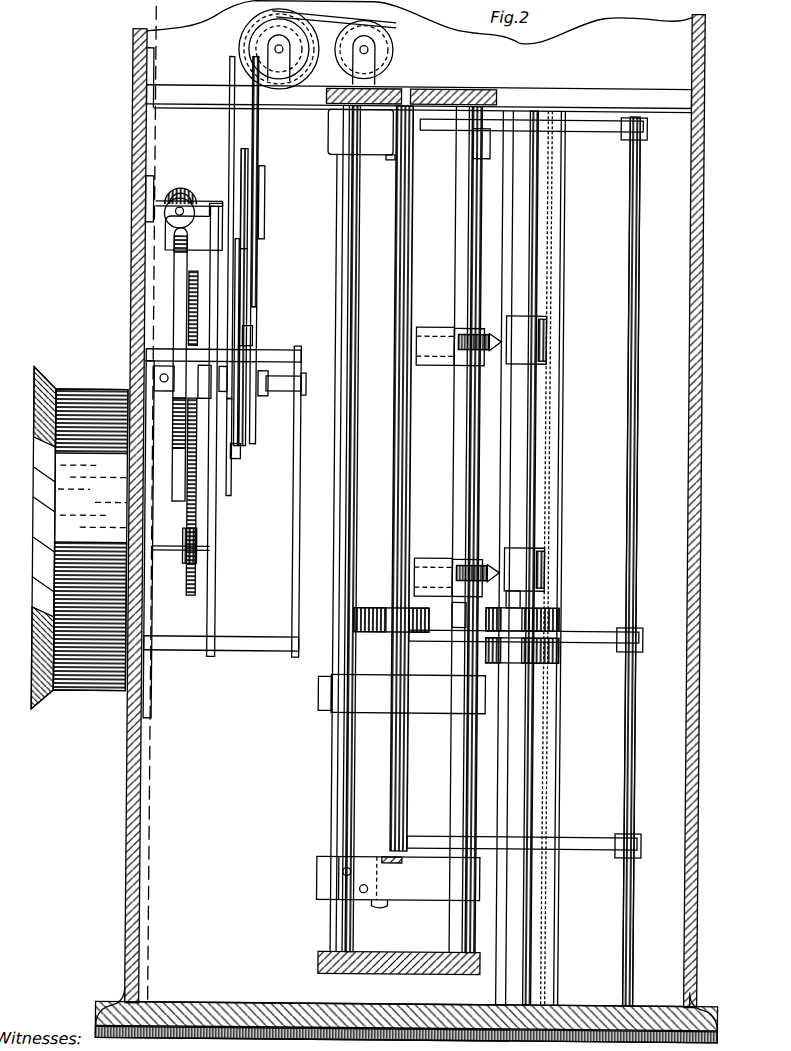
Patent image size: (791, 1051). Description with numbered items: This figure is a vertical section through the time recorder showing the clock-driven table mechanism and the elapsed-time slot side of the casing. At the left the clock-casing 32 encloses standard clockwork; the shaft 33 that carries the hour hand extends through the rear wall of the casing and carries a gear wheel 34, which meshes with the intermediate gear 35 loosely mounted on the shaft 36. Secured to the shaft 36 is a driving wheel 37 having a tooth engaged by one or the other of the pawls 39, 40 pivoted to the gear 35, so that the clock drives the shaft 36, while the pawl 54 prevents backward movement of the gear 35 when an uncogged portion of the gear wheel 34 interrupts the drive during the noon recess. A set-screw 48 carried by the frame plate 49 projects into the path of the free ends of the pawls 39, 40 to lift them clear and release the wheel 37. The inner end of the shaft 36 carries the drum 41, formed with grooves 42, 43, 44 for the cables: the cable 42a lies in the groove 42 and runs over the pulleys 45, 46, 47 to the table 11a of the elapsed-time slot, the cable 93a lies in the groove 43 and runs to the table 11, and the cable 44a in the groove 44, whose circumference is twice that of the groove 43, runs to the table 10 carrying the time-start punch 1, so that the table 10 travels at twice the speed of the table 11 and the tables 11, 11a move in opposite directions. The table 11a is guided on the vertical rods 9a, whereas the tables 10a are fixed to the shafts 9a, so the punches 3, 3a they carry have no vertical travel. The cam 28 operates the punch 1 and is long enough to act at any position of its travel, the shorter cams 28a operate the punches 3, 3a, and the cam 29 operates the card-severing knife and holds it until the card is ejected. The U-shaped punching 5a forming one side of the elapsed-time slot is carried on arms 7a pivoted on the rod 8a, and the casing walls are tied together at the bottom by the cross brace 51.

The punch 1 is at (160, 16).
The clock-casing 32 is at (90, 690).
The set-screw 48 is at (143, 208).
The frame plate 49 is at (213, 204).
The pawl 39 is at (172, 268).
The intermediate gear 35 is at (187, 312).
The pawl 54 is at (200, 355).
The driving wheel 37 is at (160, 372).
The shaft 36 is at (287, 350).
The pawl 40 is at (176, 502).
The shaft 33 is at (170, 556).
The gear wheel 34 is at (197, 580).
The table 11 is at (320, 697).
The table 11a is at (398, 858).
The cross brace 51 is at (372, 973).
The U-shaped punching 5a is at (411, 430).
The rods 9a is at (393, 470).
The table 10 is at (432, 183).
The tables 10a is at (446, 326).
The punch 3 is at (492, 333).
The punch 3a is at (490, 564).
The cam 28 is at (558, 300).
The cams 28a is at (546, 345).
The cam 29 is at (560, 614).
The arms 7a is at (588, 131).
The rod 8a is at (627, 235).
The pulley 46 is at (300, 62).
The pulley 47 is at (243, 160).
The drum 41 is at (393, 22).
The pulley 45 is at (262, 190).
The cable 44a is at (226, 140).
The cable 42a is at (255, 268).
The bar 93a is at (237, 248).
The groove 42 is at (248, 440).
The groove 43 is at (242, 452).
The groove 44 is at (231, 494).